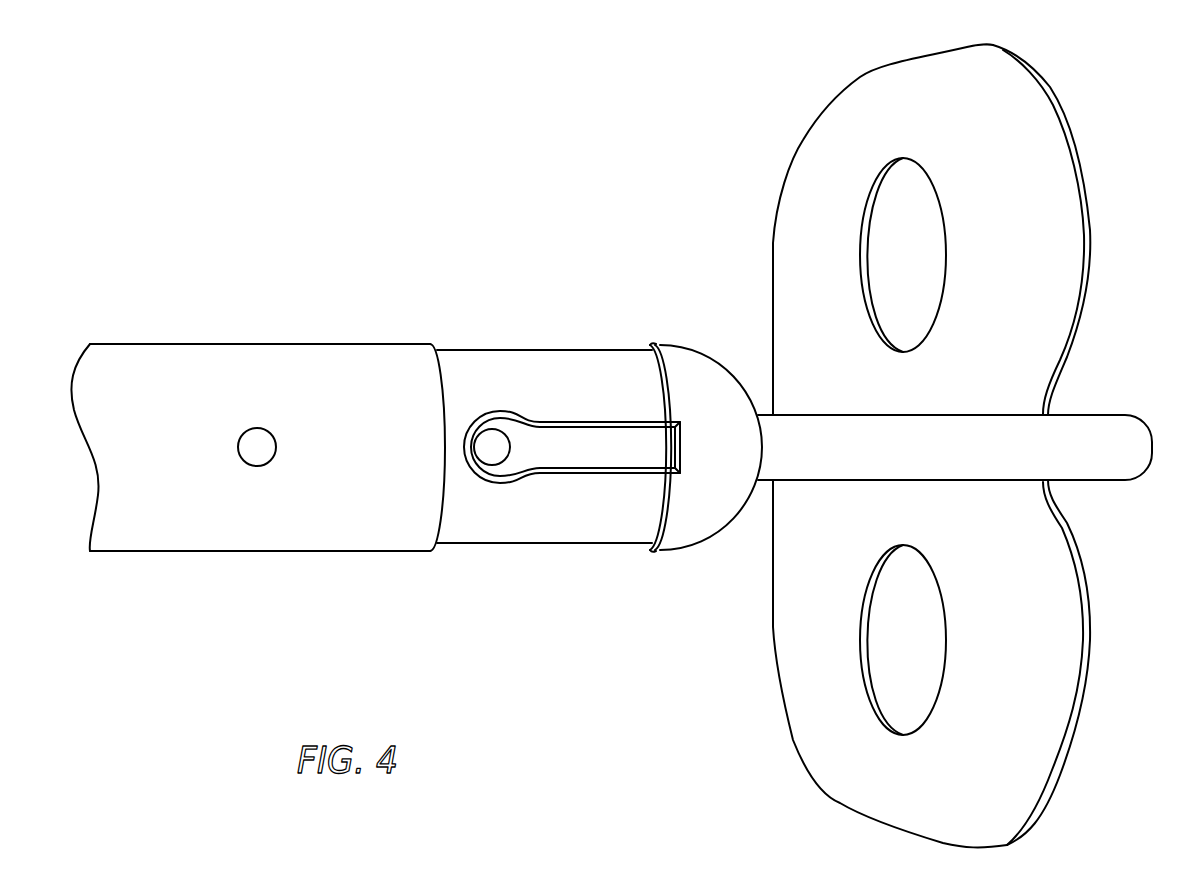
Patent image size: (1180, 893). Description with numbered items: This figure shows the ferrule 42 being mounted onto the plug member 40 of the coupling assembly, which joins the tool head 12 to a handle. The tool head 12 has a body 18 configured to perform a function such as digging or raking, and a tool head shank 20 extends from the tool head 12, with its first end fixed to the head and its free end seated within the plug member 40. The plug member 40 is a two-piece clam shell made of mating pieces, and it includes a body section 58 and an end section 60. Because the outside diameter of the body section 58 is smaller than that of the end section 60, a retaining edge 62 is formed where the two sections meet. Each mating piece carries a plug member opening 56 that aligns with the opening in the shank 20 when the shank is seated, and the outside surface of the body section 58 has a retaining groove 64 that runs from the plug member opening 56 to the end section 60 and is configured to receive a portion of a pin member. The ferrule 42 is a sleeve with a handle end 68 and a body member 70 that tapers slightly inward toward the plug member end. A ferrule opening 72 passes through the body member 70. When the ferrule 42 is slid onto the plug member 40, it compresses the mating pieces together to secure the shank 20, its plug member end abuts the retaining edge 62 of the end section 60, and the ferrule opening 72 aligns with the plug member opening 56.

The tool head 12 is at (742, 572).
The body 18 is at (802, 655).
The tool head shank 20 is at (828, 435).
The plug member 40 is at (568, 345).
The ferrule 42 is at (267, 338).
The plug member opening 56 is at (493, 437).
The body section 58 is at (487, 547).
The end section 60 is at (703, 378).
The retaining edge 62 is at (647, 350).
The retaining groove 64 is at (577, 452).
The handle end 68 is at (433, 350).
The body member 70 is at (205, 355).
The ferrule opening 72 is at (256, 458).